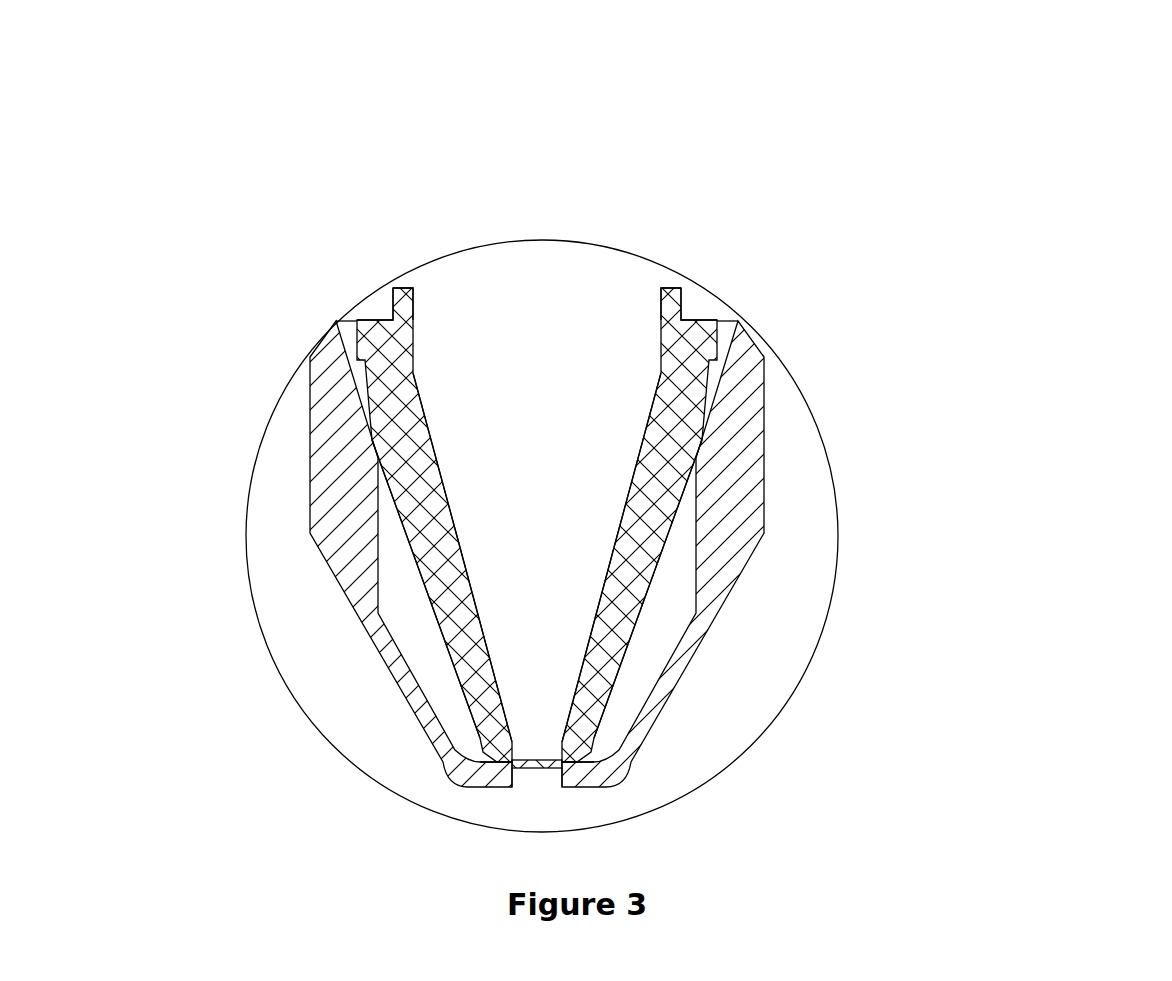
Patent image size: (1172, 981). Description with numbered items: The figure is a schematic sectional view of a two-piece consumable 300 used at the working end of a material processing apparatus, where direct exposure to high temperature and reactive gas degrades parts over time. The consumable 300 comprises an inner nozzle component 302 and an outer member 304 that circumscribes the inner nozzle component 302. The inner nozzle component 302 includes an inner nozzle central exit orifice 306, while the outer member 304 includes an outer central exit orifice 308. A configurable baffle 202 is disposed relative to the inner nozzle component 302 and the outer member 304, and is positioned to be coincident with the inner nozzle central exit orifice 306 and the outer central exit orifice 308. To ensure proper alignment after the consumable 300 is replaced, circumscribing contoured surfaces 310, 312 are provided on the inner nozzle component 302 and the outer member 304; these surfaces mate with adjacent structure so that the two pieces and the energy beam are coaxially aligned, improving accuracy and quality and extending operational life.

The consumable 300 is at (950, 125).
The inner nozzle component 302 is at (392, 307).
The outer member 304 is at (335, 488).
The inner nozzle central exit orifice 306 is at (538, 740).
The outer central exit orifice 308 is at (532, 798).
The circumscribing contoured surface 310 is at (370, 303).
The circumscribing contoured surface 312 is at (370, 428).
The configurable baffle 202 is at (552, 770).